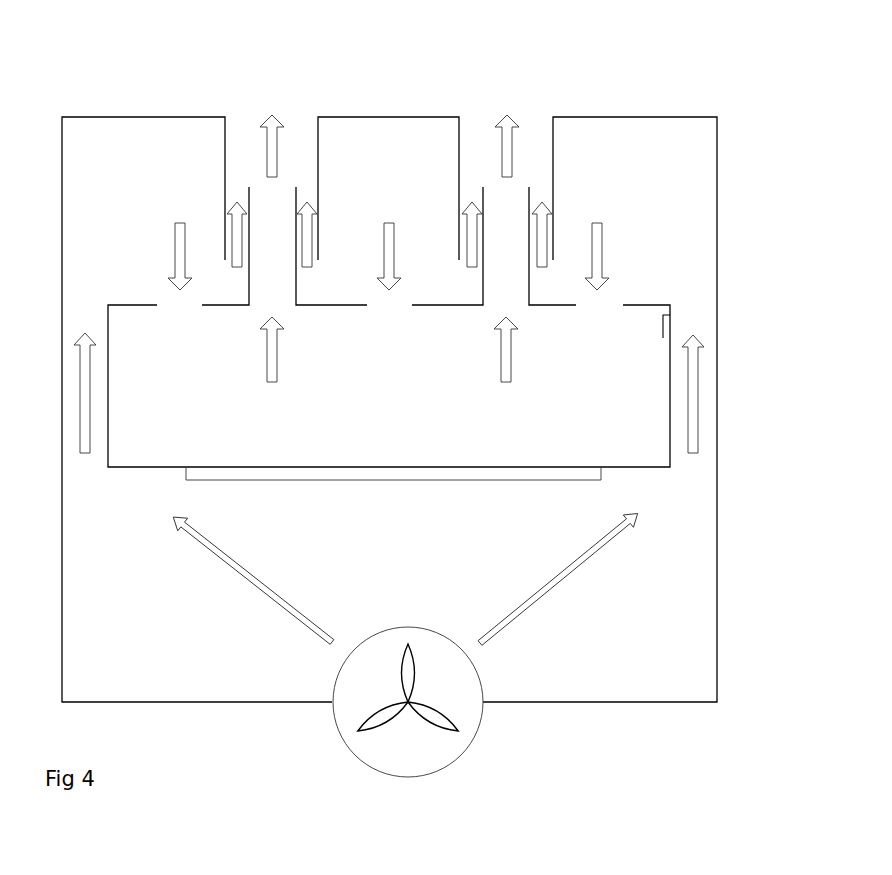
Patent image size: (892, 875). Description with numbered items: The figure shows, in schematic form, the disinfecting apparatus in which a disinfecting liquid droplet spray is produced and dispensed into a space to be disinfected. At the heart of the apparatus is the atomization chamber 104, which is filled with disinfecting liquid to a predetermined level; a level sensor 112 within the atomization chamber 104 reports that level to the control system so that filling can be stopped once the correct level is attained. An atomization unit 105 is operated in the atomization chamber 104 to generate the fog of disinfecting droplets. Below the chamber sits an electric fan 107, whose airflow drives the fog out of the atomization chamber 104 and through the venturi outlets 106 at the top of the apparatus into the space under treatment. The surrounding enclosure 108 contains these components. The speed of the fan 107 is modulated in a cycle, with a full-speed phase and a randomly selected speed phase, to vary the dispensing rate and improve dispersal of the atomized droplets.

The atomization chamber 104 is at (672, 468).
The atomization unit 105 is at (413, 481).
The venturi outlets 106 is at (496, 112).
The electric fan 107 is at (455, 761).
The housing 108 is at (645, 704).
The level sensor 112 is at (672, 325).